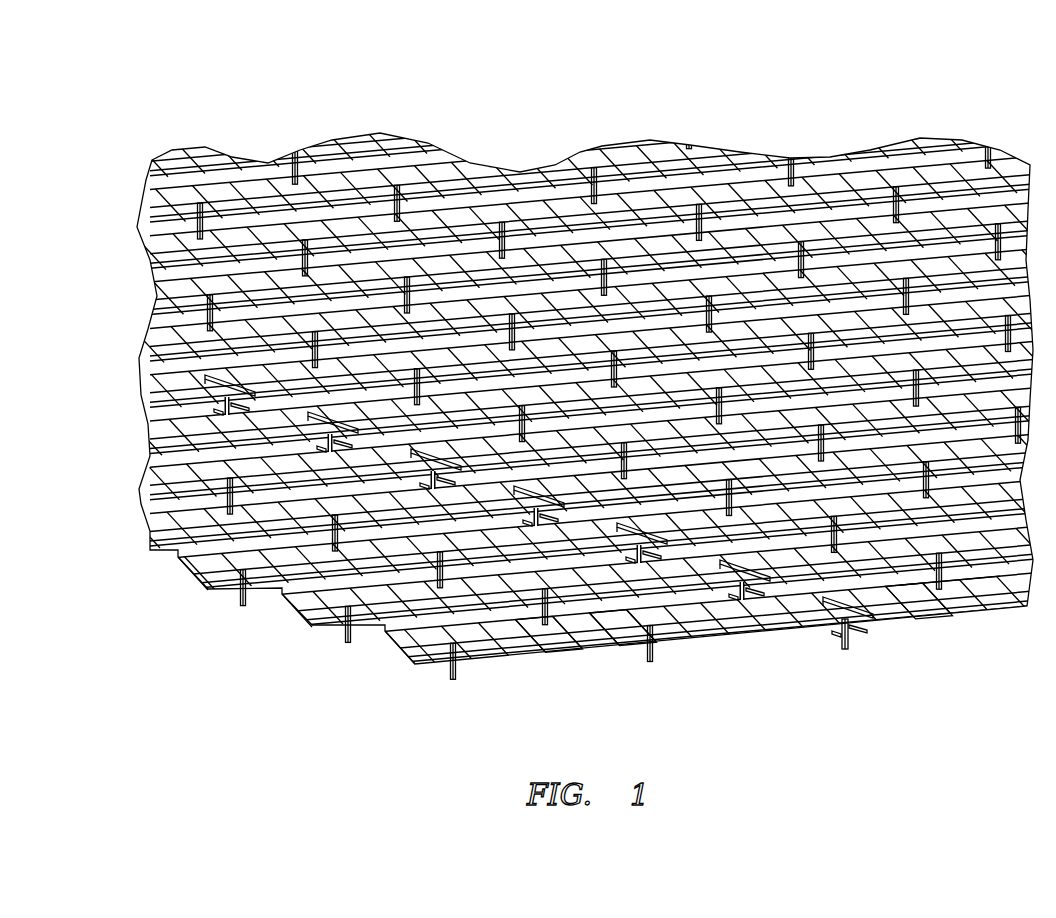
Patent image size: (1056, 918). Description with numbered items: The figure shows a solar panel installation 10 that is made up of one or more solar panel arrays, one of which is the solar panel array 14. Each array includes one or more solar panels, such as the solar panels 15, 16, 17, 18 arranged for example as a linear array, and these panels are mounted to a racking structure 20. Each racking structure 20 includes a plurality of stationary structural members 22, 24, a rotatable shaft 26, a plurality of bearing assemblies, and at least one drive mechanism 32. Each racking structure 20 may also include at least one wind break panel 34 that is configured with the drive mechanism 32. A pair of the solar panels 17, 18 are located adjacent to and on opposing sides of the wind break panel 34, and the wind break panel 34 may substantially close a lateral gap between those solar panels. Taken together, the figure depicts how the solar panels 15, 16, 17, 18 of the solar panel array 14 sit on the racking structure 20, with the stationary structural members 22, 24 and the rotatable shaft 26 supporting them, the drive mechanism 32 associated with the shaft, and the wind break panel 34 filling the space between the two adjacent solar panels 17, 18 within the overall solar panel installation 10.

The solar panel installation 10 is at (592, 381).
The solar panel array 14 is at (376, 654).
The solar panel 15 is at (545, 650).
The solar panel 16 is at (616, 642).
The solar panel 17 is at (825, 624).
The solar panel 18 is at (887, 614).
The racking structure 20 is at (802, 660).
The stationary structural member 22 is at (853, 648).
The stationary structural member 24 is at (930, 585).
The rotatable shaft 26 is at (437, 662).
The drive mechanism 32 is at (868, 639).
The wind break panel 34 is at (822, 595).